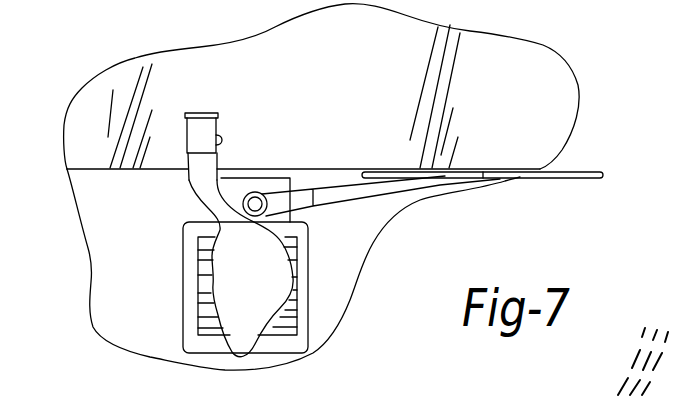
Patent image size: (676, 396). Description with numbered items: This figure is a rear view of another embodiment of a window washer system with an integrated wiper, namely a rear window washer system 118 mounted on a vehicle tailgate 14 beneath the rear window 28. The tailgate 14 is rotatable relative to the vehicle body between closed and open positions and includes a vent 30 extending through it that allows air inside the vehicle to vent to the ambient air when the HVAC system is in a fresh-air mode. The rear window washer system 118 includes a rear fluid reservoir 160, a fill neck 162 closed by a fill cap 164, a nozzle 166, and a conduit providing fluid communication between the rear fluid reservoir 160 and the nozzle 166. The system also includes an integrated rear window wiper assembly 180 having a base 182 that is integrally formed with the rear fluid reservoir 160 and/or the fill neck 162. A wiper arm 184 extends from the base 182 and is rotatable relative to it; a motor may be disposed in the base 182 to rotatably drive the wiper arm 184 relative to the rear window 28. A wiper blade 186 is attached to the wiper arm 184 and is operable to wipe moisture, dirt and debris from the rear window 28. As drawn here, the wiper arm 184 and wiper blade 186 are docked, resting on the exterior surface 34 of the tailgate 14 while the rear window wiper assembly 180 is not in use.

The tailgate 14 is at (93, 279).
The rear window 28 is at (355, 45).
The exterior surface 34 is at (128, 262).
The vent 30 is at (190, 324).
The rear window washer system 118 is at (299, 288).
The rear fluid reservoir 160 is at (283, 276).
The fill neck 162 is at (205, 183).
The fill cap 164 is at (203, 112).
The nozzle 166 is at (223, 140).
The rear window wiper assembly 180 is at (386, 194).
The base 182 is at (277, 228).
The wiper arm 184 is at (337, 188).
The wiper blade 186 is at (600, 171).